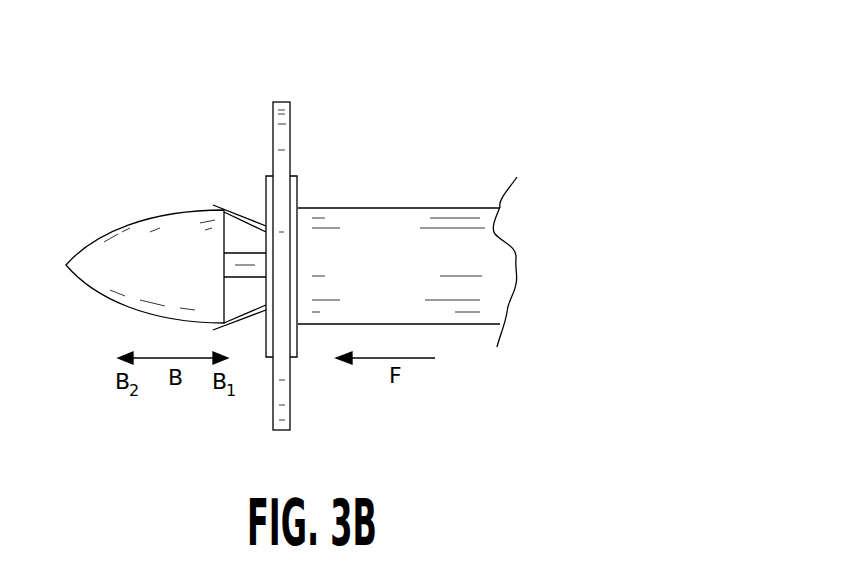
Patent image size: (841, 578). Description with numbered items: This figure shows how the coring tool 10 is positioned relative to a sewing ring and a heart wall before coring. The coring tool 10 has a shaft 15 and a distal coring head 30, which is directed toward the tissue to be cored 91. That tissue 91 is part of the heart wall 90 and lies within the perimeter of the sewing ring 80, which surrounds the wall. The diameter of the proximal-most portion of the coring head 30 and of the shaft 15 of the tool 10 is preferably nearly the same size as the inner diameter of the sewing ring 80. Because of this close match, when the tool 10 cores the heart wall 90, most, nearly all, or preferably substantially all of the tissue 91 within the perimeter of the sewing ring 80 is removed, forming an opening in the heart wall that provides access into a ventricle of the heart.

The coring tool 10 is at (468, 167).
The shaft 15 is at (370, 208).
The distal coring head 30 is at (128, 228).
The sewing ring 80 is at (292, 177).
The heart wall 90 is at (278, 102).
The tissue to be cored 91 is at (238, 197).